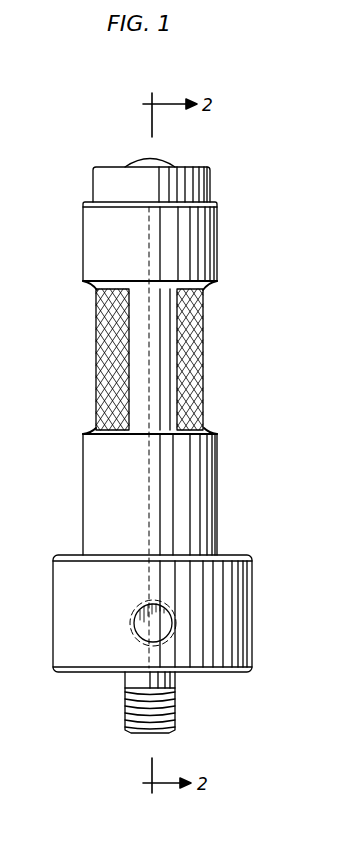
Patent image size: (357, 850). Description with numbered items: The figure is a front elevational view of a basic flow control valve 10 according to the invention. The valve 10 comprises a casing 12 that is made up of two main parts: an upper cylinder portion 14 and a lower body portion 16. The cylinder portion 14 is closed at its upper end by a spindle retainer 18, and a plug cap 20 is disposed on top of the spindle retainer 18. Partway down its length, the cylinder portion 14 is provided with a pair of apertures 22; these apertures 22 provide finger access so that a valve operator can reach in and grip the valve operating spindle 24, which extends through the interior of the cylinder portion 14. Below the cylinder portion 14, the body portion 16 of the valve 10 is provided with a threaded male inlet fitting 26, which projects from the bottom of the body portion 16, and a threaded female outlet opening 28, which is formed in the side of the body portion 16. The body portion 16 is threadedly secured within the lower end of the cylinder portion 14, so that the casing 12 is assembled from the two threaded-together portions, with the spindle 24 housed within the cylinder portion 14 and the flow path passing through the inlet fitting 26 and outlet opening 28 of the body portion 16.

The flow control valve 10 is at (226, 164).
The casing 12 is at (58, 437).
The cylinder portion 14 is at (83, 245).
The body portion 16 is at (252, 577).
The spindle retainer 18 is at (93, 182).
The plug cap 20 is at (133, 160).
The apertures 22 is at (210, 283).
The valve operating spindle 24 is at (193, 367).
The threaded male inlet fitting 26 is at (128, 713).
The threaded female outlet opening 28 is at (135, 618).